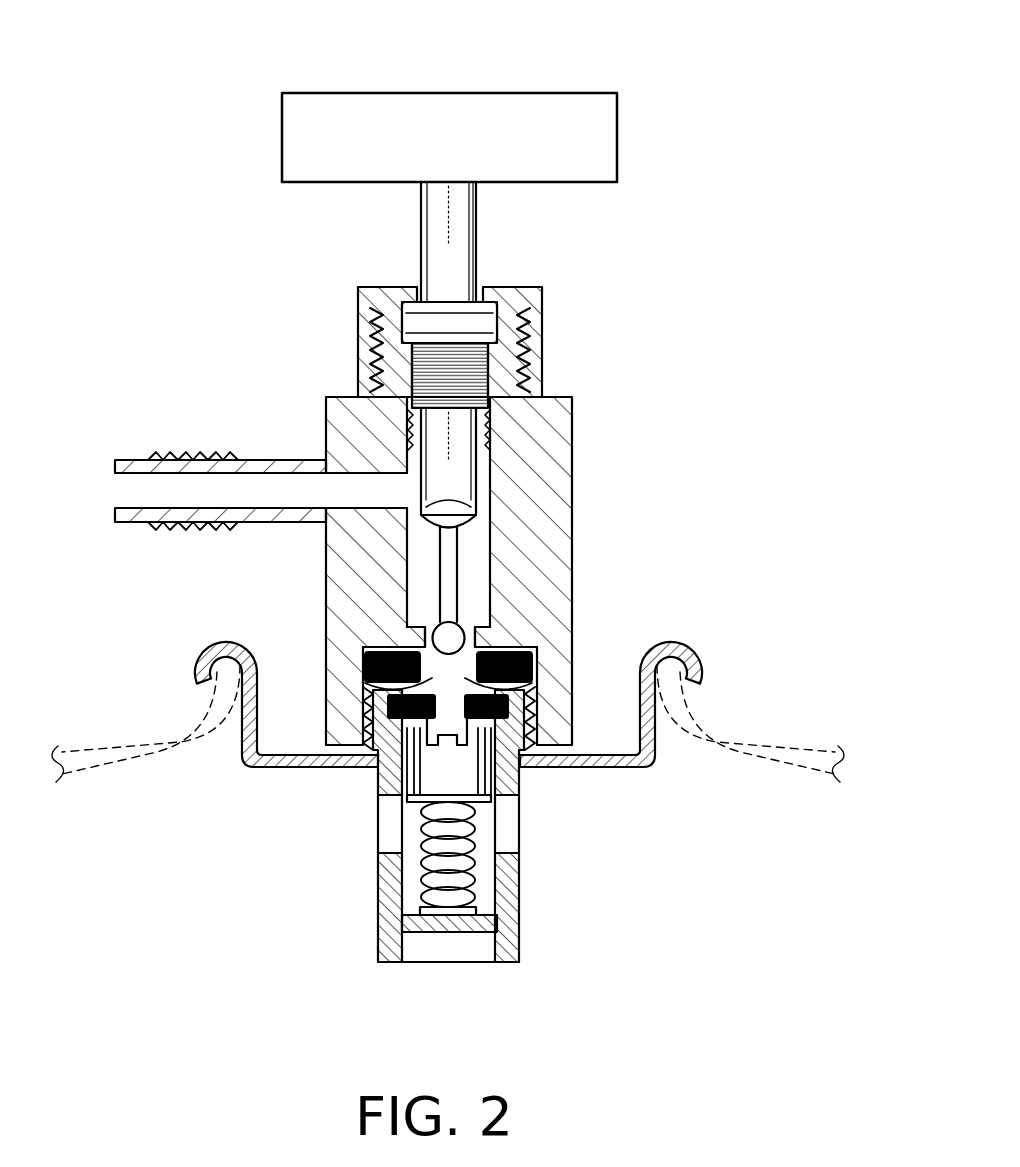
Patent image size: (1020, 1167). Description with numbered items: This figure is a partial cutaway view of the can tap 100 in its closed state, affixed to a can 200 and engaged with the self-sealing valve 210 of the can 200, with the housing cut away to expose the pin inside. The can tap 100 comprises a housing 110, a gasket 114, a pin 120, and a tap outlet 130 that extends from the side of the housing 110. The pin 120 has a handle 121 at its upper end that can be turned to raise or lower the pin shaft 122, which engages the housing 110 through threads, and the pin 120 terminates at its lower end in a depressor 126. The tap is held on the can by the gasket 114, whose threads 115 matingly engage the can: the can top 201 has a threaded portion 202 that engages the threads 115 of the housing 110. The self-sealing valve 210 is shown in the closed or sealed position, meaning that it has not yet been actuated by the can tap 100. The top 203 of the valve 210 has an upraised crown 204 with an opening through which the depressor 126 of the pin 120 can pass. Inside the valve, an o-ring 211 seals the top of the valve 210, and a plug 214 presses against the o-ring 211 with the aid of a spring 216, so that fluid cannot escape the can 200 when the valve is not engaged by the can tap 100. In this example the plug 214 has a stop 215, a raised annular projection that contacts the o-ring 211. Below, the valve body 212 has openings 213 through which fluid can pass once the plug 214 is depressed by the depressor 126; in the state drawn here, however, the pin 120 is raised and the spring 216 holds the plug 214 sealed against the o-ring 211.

The can tap 100 is at (163, 230).
The housing 110 is at (574, 456).
The gasket 114 is at (377, 638).
The threads 115 is at (370, 686).
The pin 120 is at (398, 253).
The handle 121 is at (619, 140).
The pin shaft 122 is at (479, 246).
The depressor 126 is at (455, 628).
The tap outlet 130 is at (127, 460).
The can 200 is at (120, 673).
The can top 201 is at (258, 768).
The threaded portion 202 is at (385, 712).
The top 203 is at (512, 667).
The upraised crown 204 is at (472, 688).
The self-sealing valve 210 is at (523, 968).
The o-ring 211 is at (372, 757).
The valve body 212 is at (520, 922).
The openings 213 is at (508, 832).
The plug 214 is at (412, 780).
The stop 215 is at (482, 762).
The spring 216 is at (423, 890).